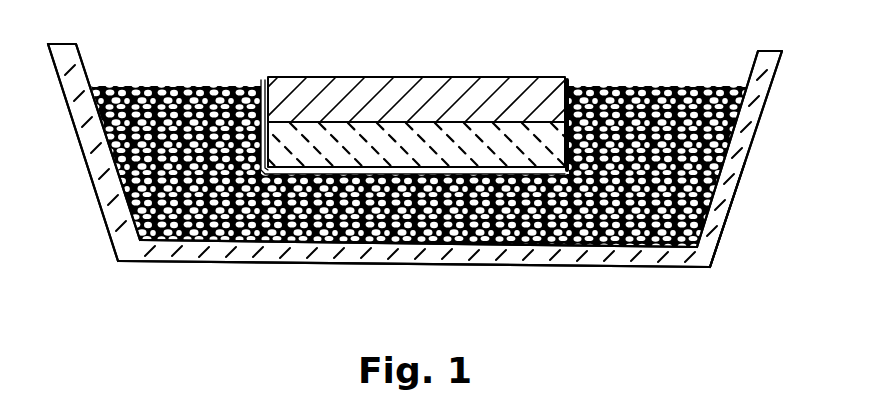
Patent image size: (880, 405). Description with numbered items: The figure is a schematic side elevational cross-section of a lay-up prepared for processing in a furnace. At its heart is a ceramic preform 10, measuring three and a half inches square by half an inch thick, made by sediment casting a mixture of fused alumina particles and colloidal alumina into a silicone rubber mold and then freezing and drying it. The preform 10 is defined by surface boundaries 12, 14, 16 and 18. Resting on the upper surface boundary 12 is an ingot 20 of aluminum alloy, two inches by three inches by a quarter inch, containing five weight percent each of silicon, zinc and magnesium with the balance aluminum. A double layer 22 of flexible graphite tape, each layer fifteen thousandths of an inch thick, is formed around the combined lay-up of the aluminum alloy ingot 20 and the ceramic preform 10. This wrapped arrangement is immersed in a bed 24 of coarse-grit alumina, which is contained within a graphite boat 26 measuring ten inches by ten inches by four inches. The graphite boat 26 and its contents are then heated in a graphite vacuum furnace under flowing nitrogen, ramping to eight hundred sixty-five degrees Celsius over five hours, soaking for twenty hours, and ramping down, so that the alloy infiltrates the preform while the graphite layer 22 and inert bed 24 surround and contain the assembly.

The preform 10 is at (388, 242).
The surface boundary 12 is at (390, 122).
The surface boundary 14 is at (540, 246).
The surface boundary 16 is at (297, 248).
The surface boundary 18 is at (205, 240).
The ingot 20 is at (495, 95).
The double layer 22 is at (262, 82).
The bed 24 is at (738, 142).
The graphite boat 26 is at (718, 222).